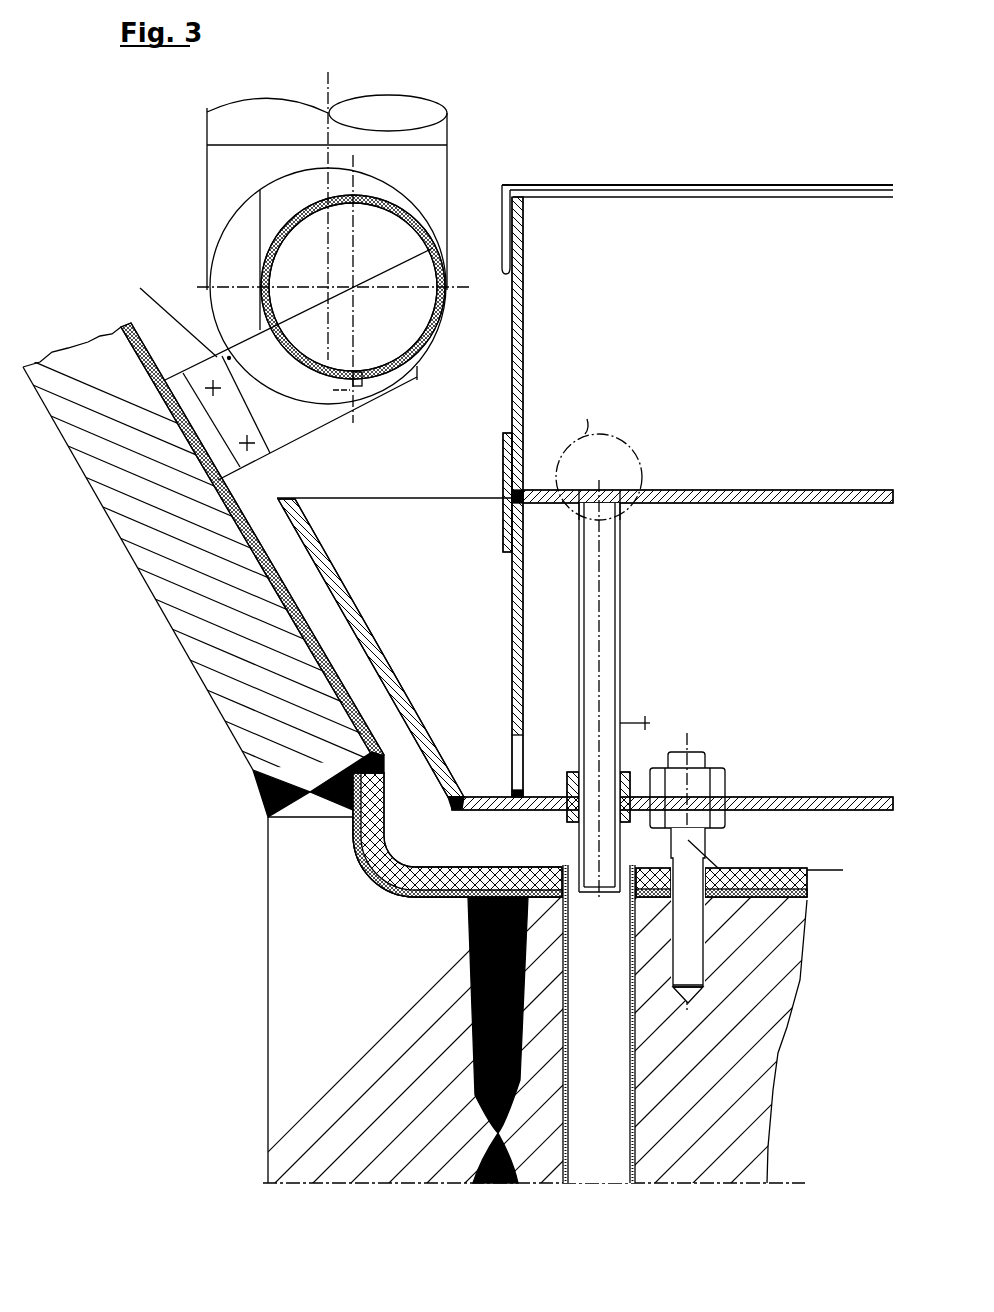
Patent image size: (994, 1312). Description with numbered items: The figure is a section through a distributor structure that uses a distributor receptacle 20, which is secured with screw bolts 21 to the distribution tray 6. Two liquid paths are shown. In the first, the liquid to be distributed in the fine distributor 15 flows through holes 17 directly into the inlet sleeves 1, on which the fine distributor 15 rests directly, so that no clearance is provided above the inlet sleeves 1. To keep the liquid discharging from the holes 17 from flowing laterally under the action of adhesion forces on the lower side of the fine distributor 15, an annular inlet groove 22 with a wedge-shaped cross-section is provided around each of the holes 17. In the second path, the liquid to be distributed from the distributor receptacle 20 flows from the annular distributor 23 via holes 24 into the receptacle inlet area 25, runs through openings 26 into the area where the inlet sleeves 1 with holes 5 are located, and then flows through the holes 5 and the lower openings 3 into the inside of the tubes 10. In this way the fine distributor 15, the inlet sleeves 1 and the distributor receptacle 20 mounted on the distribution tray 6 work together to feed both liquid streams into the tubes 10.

The inlet sleeve 1 is at (621, 540).
The lower opening 3 is at (600, 893).
The hole 5 is at (627, 719).
The distribution tray 6 is at (781, 868).
The tube 10 is at (637, 1068).
The fine distributor 15 is at (764, 500).
The hole 17 is at (621, 490).
The distributor receptacle 20 is at (855, 797).
The screw bolt 21 is at (770, 902).
The annular inlet groove 22 is at (578, 504).
The annular distributor 23 is at (443, 314).
The hole 24 is at (364, 374).
The receptacle inlet area 25 is at (394, 653).
The opening 26 is at (514, 792).